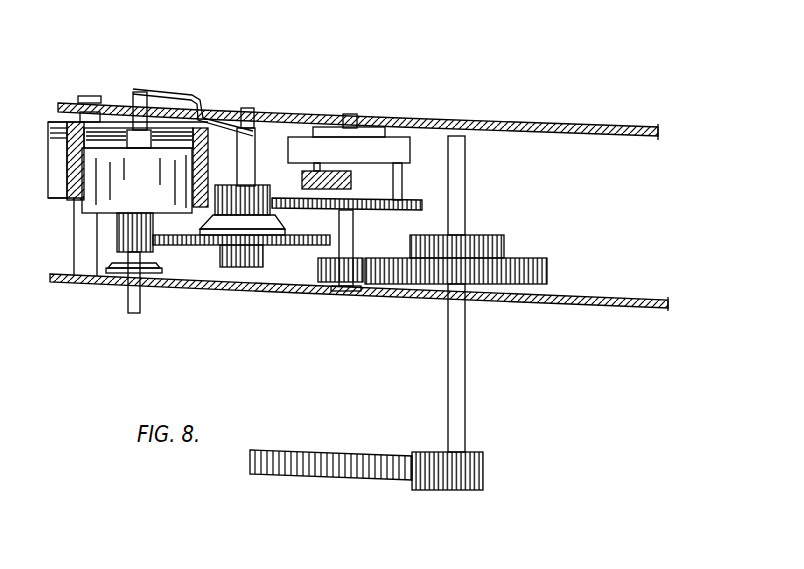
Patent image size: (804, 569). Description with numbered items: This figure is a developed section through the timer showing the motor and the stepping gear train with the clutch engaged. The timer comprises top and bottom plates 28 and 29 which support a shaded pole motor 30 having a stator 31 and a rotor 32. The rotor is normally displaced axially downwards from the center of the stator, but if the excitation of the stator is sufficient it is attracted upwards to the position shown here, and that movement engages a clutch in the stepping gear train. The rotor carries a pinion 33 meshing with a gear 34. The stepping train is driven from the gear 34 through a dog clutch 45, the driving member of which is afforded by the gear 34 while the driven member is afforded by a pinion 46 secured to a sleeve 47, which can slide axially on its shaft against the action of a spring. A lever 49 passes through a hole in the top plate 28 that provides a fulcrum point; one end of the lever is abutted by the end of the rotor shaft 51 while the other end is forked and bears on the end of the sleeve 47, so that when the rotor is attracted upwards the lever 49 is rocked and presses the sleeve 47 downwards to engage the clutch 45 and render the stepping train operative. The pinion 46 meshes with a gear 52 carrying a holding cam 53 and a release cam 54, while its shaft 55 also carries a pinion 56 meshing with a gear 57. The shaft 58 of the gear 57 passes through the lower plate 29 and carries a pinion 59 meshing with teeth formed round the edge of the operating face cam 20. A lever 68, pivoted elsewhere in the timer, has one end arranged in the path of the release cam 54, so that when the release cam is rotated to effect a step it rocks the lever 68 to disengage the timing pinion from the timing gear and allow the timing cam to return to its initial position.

The operating face cam 20 is at (331, 483).
The top plate 28 is at (358, 111).
The bottom plate 29 is at (359, 303).
The shaded pole motor 30 is at (53, 160).
The stator 31 is at (116, 148).
The rotor 32 is at (141, 202).
The pinion 33 is at (99, 263).
The gear 34 is at (219, 278).
The dog clutch 45 is at (241, 227).
The pinion 46 is at (242, 185).
The sleeve 47 is at (262, 134).
The lever 49 is at (193, 98).
The rotor shaft 51 is at (121, 103).
The gear 52 is at (384, 194).
The holding cam 53 is at (395, 139).
The release cam 54 is at (419, 178).
The shaft 55 is at (366, 250).
The pinion 56 is at (316, 266).
The gear 57 is at (481, 262).
The shaft 58 is at (472, 294).
The pinion 59 is at (450, 489).
The lever 68 is at (304, 173).